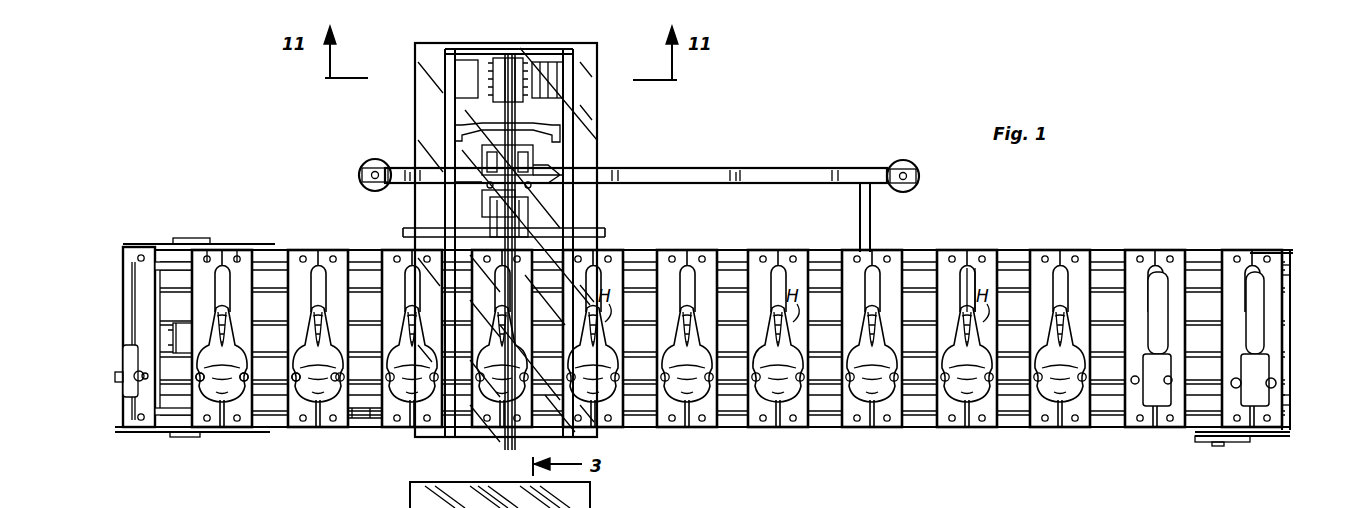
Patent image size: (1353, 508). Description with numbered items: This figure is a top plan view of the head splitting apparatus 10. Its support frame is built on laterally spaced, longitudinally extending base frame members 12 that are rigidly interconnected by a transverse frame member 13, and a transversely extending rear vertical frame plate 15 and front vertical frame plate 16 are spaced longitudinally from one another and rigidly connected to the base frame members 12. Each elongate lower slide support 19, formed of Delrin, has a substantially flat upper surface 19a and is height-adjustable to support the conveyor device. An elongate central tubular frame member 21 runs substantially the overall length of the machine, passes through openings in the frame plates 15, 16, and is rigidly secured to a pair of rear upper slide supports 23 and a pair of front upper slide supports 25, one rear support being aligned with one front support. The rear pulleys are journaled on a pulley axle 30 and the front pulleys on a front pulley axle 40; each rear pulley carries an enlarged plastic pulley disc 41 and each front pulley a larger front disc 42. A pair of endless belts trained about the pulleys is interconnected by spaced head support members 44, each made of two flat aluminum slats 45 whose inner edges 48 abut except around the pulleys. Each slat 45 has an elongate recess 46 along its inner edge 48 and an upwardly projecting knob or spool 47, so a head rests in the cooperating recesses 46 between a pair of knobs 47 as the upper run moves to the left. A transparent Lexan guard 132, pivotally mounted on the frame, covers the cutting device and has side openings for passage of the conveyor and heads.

The head splitting apparatus 10 is at (1043, 188).
The base frame members 12 is at (800, 168).
The transverse frame member 13 is at (870, 224).
The rear vertical frame plate 15 is at (573, 130).
The front vertical frame plate 16 is at (445, 100).
The transparent housing or guard 132 is at (595, 148).
The lower slide support 19 is at (914, 292).
The upper surface 19a is at (271, 392).
The central tubular frame member 21 is at (721, 328).
The rear upper slide supports 23 is at (730, 268).
The front upper slide supports 25 is at (358, 250).
The pulley axle 30 is at (1214, 444).
The front pulley axle 40 is at (192, 438).
The pulley disc 41 is at (1284, 250).
The front disc 42 is at (262, 248).
The head support members 44 is at (310, 250).
The slat 45 is at (702, 420).
The recess 46 is at (125, 356).
The knob or spool 47 is at (335, 374).
The inner edge 48 is at (970, 258).